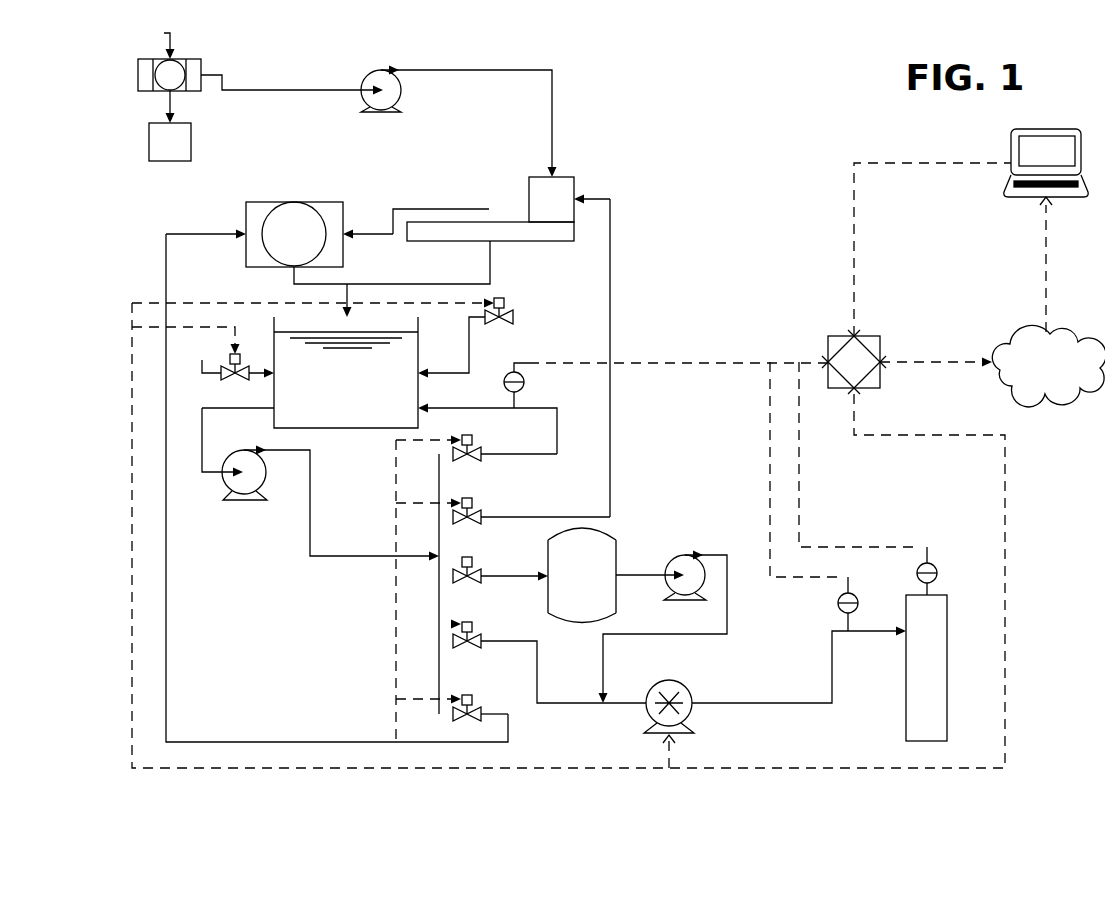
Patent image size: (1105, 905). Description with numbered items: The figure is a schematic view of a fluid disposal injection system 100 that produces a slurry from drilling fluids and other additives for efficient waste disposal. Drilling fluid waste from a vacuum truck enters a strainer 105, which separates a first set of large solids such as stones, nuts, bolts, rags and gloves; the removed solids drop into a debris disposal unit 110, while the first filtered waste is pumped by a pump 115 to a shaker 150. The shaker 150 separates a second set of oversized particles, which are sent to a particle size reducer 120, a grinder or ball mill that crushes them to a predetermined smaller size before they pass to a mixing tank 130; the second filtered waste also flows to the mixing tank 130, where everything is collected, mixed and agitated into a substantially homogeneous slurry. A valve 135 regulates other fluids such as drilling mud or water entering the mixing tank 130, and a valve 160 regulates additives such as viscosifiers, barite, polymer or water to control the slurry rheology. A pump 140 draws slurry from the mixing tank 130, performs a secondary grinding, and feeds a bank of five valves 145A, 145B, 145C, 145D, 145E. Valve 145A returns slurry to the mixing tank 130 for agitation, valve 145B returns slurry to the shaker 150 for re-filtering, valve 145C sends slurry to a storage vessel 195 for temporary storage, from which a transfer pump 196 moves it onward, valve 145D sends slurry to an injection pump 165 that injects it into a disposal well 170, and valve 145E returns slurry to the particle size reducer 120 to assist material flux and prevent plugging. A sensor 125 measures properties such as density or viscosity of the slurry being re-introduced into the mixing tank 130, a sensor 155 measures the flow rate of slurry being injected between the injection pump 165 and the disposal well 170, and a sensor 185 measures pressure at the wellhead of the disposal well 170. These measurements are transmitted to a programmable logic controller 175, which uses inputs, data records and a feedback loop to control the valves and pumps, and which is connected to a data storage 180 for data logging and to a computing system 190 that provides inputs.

The fluid disposal injection system 100 is at (619, 47).
The strainer 105 is at (138, 78).
The debris disposal unit 110 is at (157, 151).
The pump 115 is at (383, 112).
The particle size reducer 120 is at (281, 243).
The sensor 125 is at (526, 378).
The mixing tank 130 is at (333, 383).
The valve 135 is at (514, 317).
The pump 140 is at (240, 501).
The valve 145A is at (472, 462).
The valve 145B is at (472, 525).
The valve 145C is at (472, 585).
The valve 145D is at (470, 650).
The valve 145E is at (470, 723).
The shaker 150 is at (538, 208).
The sensor 155 is at (856, 594).
The valve 160 is at (229, 358).
The injection pump 165 is at (677, 681).
The disposal well 170 is at (914, 623).
The programmable logic controller 175 is at (862, 390).
The data storage 180 is at (1034, 371).
The sensor 185 is at (935, 563).
The computing system 190 is at (1034, 160).
The storage vessel 195 is at (569, 584).
The transfer pump 196 is at (679, 556).